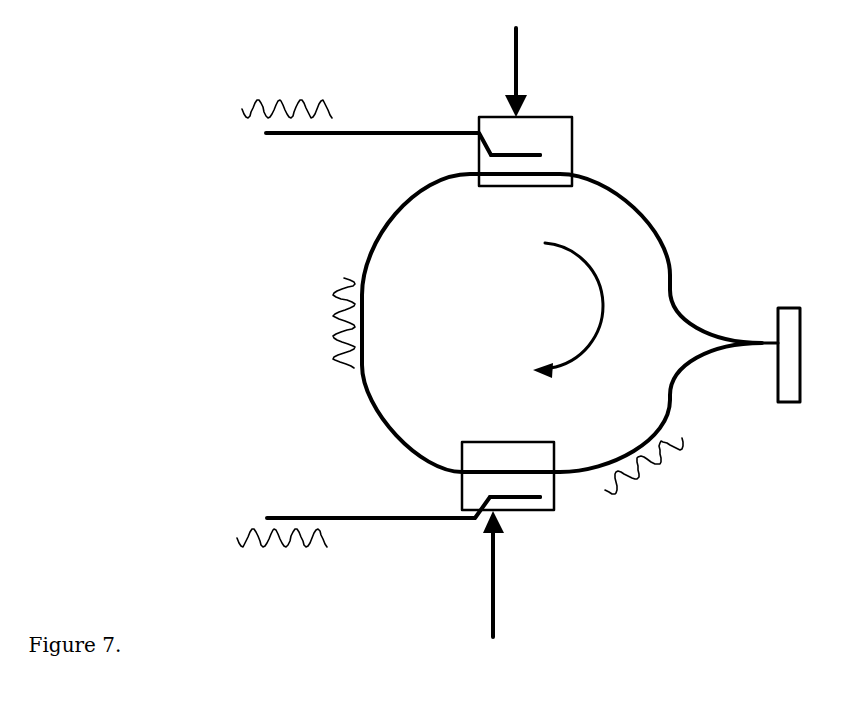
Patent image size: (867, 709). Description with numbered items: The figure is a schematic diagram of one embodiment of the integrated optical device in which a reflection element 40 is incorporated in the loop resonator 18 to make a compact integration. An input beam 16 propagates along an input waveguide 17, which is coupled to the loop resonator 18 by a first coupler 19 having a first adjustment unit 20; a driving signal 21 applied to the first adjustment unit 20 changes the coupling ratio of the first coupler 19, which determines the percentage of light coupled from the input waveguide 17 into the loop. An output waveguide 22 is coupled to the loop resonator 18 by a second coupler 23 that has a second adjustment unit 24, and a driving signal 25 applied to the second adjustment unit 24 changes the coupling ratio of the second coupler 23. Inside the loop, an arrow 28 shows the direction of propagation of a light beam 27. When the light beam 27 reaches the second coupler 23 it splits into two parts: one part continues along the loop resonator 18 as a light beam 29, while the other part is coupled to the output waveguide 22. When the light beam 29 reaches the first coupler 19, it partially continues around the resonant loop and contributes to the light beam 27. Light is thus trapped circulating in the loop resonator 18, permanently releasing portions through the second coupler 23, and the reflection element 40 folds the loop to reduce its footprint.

The input beam 16 is at (272, 96).
The input waveguide 17 is at (403, 126).
The loop resonator 18 is at (562, 323).
The first coupler 19 is at (538, 157).
The first adjustment unit 20 is at (525, 136).
The driving signal 21 is at (502, 66).
The output waveguide 22 is at (388, 515).
The second coupler 23 is at (535, 478).
The second adjustment unit 24 is at (508, 491).
The driving signal 25 is at (510, 574).
The light beam 27 is at (669, 462).
The arrow 28 is at (568, 310).
The light beam 29 is at (323, 324).
The reflection element 40 is at (792, 335).